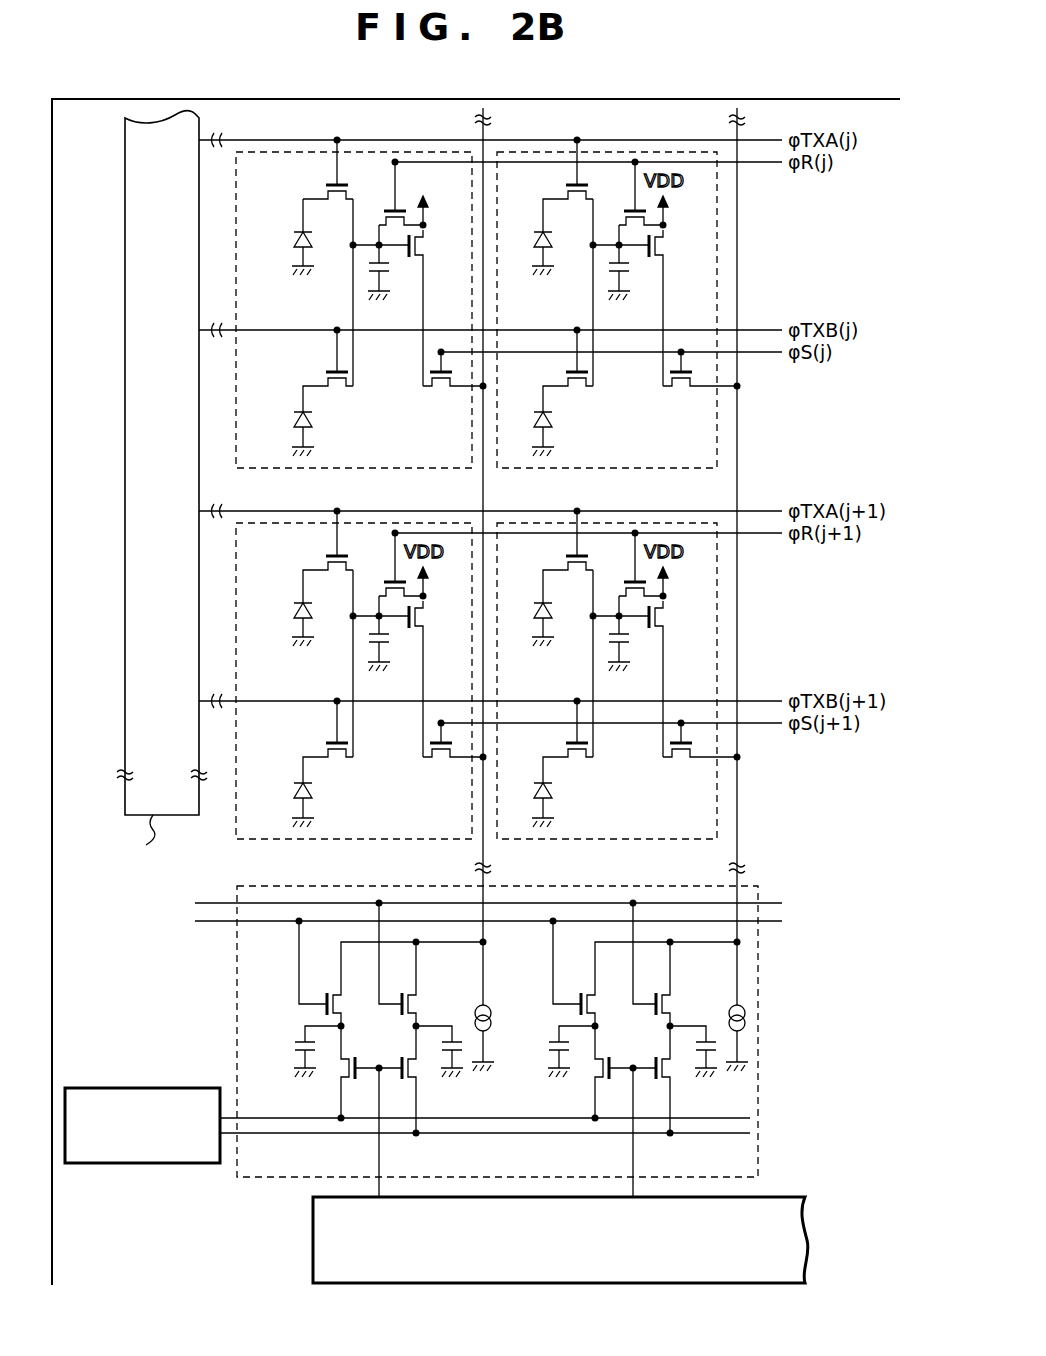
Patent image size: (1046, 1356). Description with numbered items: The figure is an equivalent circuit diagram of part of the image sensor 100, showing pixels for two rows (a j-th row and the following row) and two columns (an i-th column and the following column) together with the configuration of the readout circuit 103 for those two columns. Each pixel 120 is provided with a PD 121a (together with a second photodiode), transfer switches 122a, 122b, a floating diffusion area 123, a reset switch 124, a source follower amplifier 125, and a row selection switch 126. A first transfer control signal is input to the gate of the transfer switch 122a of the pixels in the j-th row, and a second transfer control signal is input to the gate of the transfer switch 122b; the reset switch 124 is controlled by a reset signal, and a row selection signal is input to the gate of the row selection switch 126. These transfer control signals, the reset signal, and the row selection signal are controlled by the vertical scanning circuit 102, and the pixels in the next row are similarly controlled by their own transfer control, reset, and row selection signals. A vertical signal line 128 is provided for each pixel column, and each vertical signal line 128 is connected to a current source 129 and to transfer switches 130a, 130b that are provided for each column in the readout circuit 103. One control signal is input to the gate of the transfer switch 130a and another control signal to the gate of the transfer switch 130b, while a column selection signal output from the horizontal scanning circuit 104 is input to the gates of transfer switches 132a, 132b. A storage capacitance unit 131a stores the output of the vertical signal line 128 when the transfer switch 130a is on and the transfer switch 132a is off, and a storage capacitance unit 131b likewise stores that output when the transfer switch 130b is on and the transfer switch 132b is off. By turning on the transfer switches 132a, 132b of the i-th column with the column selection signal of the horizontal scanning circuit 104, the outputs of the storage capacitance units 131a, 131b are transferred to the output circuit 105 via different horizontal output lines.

The image sensor 100 is at (738, 99).
The vertical scanning circuit 102 is at (148, 516).
The readout circuit 103 is at (758, 1052).
The horizontal scanning circuit 104 is at (313, 1236).
The output circuit 105 is at (170, 1088).
The pixel 120 is at (288, 475).
The PD 121a is at (290, 243).
The transfer switch 122a is at (325, 188).
The transfer switch 122b is at (338, 385).
The floating diffusion (FD) area 123 is at (387, 258).
The reset switch 124 is at (387, 208).
The source follower amplifier 125 is at (427, 243).
The row selection switch 126 is at (442, 383).
The vertical signal line 128 is at (487, 150).
The current source 129 is at (492, 1021).
The transfer switch 130a is at (327, 995).
The transfer switch 130b is at (401, 1000).
The storage capacitance unit 131a is at (304, 1040).
The storage capacitance unit 131b is at (456, 1038).
The transfer switch 132a is at (340, 1070).
The transfer switch 132b is at (418, 1075).